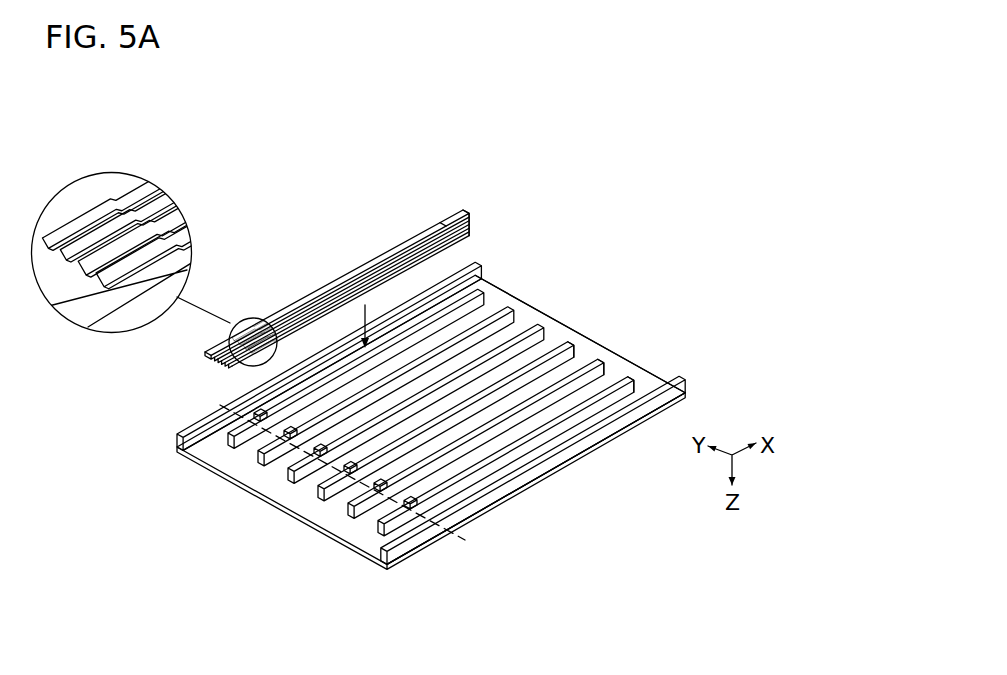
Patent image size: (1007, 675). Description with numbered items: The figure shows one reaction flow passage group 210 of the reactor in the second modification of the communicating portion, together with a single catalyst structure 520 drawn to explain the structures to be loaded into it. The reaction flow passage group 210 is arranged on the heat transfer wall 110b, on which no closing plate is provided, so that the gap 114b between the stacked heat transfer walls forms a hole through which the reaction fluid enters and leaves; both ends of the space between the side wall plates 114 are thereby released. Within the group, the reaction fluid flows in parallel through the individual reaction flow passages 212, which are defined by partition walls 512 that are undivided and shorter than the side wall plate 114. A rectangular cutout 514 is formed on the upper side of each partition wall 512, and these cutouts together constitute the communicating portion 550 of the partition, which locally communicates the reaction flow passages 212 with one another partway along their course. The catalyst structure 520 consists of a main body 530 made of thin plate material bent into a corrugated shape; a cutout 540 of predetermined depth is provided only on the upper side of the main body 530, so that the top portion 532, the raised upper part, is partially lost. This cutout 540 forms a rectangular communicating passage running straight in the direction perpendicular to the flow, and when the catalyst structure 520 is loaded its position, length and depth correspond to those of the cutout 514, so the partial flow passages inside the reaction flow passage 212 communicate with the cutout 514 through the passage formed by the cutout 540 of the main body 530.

The reaction flow passage group 210 is at (690, 226).
The heat transfer wall 110b is at (498, 298).
The side wall plate 114 is at (172, 440).
The gap 114b is at (293, 510).
The reaction flow passage 212 is at (586, 425).
The partition wall 512 is at (630, 380).
The cutout 514 is at (402, 508).
The communicating portion 550 is at (462, 545).
The catalyst structure 520 is at (313, 266).
The main body 530 is at (443, 207).
The top portion 532 is at (137, 232).
The cutout 540 is at (93, 217).